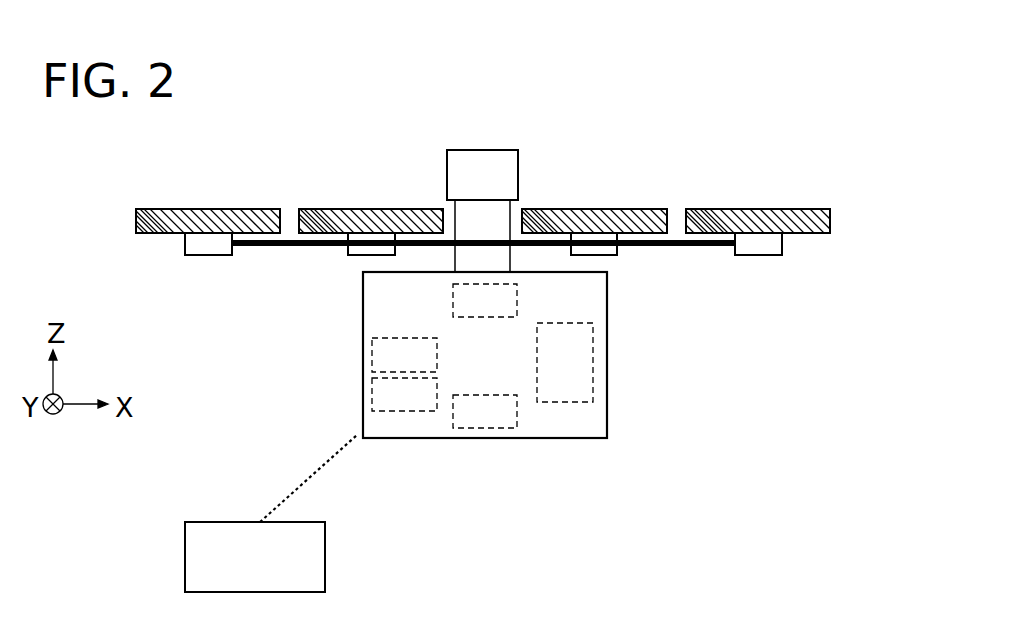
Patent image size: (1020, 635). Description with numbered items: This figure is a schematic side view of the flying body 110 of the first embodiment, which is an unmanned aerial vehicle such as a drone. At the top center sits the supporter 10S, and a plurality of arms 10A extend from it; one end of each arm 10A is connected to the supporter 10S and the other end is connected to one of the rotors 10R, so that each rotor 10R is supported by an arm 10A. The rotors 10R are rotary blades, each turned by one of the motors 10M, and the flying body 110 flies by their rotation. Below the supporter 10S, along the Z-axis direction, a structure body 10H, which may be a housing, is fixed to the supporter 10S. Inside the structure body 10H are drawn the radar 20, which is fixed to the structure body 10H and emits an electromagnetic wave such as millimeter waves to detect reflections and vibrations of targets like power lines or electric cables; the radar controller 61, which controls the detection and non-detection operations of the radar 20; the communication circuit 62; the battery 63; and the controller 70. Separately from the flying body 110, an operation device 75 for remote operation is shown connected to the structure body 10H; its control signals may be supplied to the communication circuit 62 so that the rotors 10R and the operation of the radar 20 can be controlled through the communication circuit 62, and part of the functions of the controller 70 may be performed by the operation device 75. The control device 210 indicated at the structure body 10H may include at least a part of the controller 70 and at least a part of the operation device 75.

The flying body 110 is at (818, 128).
The rotors 10R is at (198, 209).
The motors 10M is at (203, 255).
The arms 10A is at (720, 246).
The supporter 10S is at (503, 150).
The structure body 10H is at (607, 358).
The control device 210 is at (588, 410).
The radar 20 is at (453, 300).
The radar controller 61 is at (372, 355).
The communication circuit 62 is at (372, 397).
The battery 63 is at (485, 428).
The controller 70 is at (570, 403).
The operation device 75 is at (222, 522).